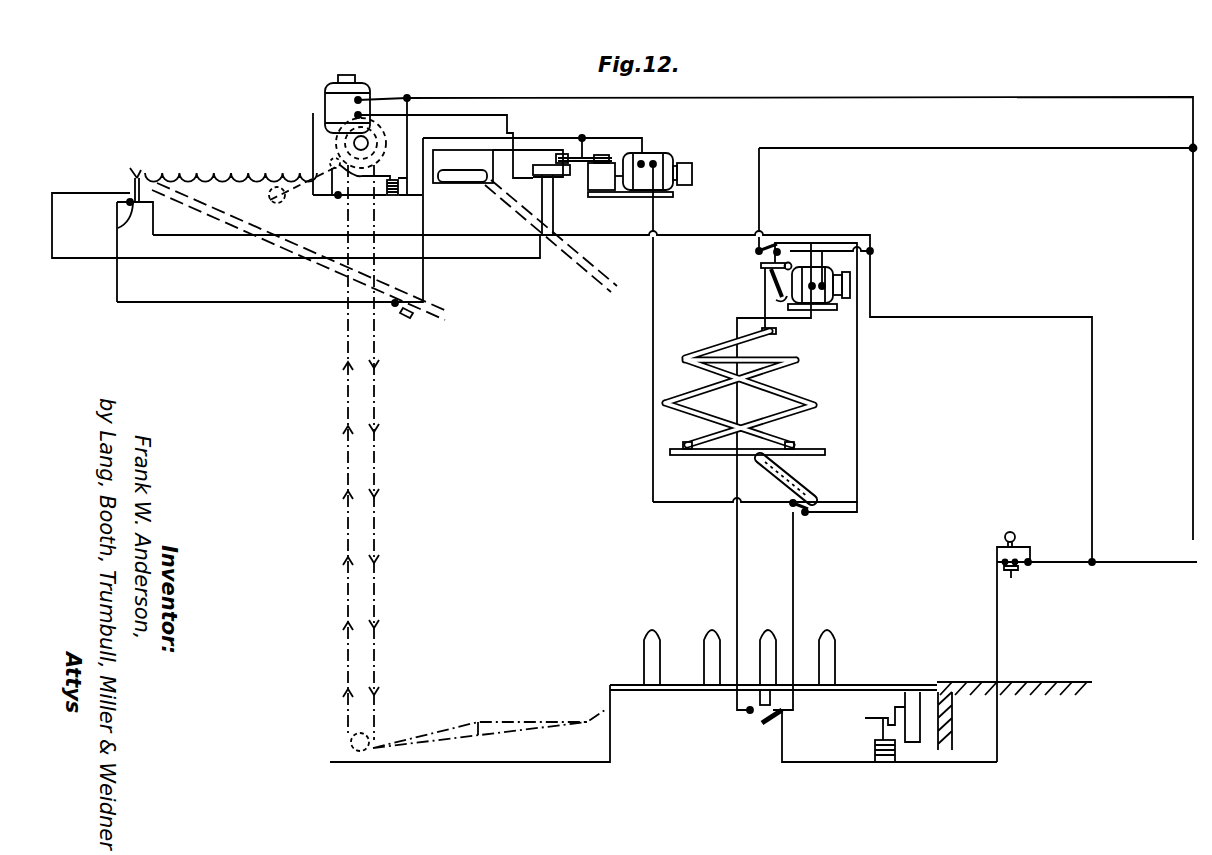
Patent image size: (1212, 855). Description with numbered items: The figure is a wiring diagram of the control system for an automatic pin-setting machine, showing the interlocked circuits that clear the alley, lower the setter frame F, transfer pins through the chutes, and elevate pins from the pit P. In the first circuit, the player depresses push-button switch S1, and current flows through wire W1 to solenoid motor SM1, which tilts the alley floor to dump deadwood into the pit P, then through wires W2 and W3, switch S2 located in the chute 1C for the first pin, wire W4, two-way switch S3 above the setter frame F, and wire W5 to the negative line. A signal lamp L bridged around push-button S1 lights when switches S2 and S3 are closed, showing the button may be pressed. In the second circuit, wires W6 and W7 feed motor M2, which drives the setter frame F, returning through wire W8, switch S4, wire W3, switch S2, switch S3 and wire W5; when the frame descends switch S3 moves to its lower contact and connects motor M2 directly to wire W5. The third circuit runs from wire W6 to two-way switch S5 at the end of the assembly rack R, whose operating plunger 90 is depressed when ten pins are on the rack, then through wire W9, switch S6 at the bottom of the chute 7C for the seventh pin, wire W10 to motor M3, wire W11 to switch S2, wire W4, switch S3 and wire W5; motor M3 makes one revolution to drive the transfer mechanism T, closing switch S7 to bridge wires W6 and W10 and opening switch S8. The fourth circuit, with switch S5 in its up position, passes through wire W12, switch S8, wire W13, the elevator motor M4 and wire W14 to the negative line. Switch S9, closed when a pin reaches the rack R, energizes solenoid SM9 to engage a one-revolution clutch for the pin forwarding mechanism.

The elevator motor M4 is at (355, 92).
The transfer mechanism T is at (460, 150).
The wire W13 is at (488, 115).
The wire W14 is at (807, 97).
The switch S8 is at (528, 177).
The wire W10 is at (560, 138).
The transfer motor M3 is at (658, 153).
The wire W5 is at (960, 148).
The operating plunger 90 is at (137, 176).
The assembly rack R is at (266, 172).
The switch S9 is at (333, 198).
The solenoid SM9 is at (423, 196).
The switch S7 is at (563, 166).
The two-way switch S5 is at (118, 222).
The wire W6 is at (156, 240).
The wire W12 is at (210, 262).
The chute for the No. 7 pin 7C is at (330, 272).
The wire W9 is at (218, 303).
The switch S6 is at (406, 313).
The chute for the No. 1 pin 1C is at (581, 272).
The two-way switch S3 is at (752, 254).
The wire W7 is at (862, 258).
The setter frame motor M2 is at (851, 288).
The setter frame F is at (809, 340).
The wire W4 is at (858, 413).
The wire W11 is at (652, 463).
The switch S2 is at (803, 514).
The signal lamp L is at (1016, 533).
The push-button switch S1 is at (1019, 572).
The wire W8 is at (736, 590).
The wire W3 is at (795, 590).
The wire W1 is at (998, 642).
The pit P is at (513, 710).
The switch S4 is at (748, 712).
The wire W2 is at (782, 748).
The solenoid motor SM1 is at (882, 762).